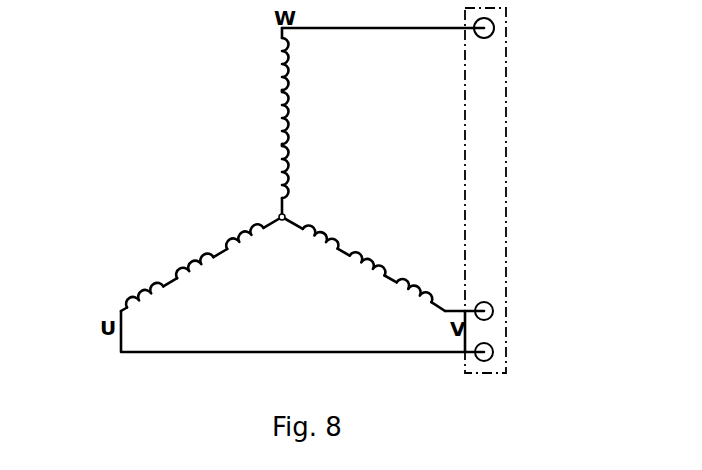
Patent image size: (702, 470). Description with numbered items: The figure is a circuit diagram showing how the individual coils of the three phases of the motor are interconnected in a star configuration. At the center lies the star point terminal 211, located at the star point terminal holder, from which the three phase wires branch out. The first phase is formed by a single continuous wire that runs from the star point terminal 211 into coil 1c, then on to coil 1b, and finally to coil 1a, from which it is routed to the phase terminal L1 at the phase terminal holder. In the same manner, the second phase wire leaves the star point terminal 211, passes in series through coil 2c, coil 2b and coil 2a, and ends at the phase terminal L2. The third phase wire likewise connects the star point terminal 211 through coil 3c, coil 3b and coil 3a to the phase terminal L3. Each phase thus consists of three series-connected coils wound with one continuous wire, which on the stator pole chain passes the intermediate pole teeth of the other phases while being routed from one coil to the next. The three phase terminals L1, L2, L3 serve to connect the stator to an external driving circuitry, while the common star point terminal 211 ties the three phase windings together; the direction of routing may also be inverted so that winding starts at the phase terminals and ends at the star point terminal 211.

The star point terminal 211 is at (279, 216).
The coil 1a is at (152, 303).
The coil 1b is at (202, 274).
The coil 1c is at (250, 245).
The coil 2a is at (421, 283).
The coil 2b is at (375, 257).
The coil 2c is at (327, 229).
The coil 3a is at (267, 64).
The coil 3b is at (267, 118).
The coil 3c is at (267, 172).
The phase terminal L1 is at (493, 353).
The phase terminal L2 is at (493, 306).
The phase terminal L3 is at (493, 34).